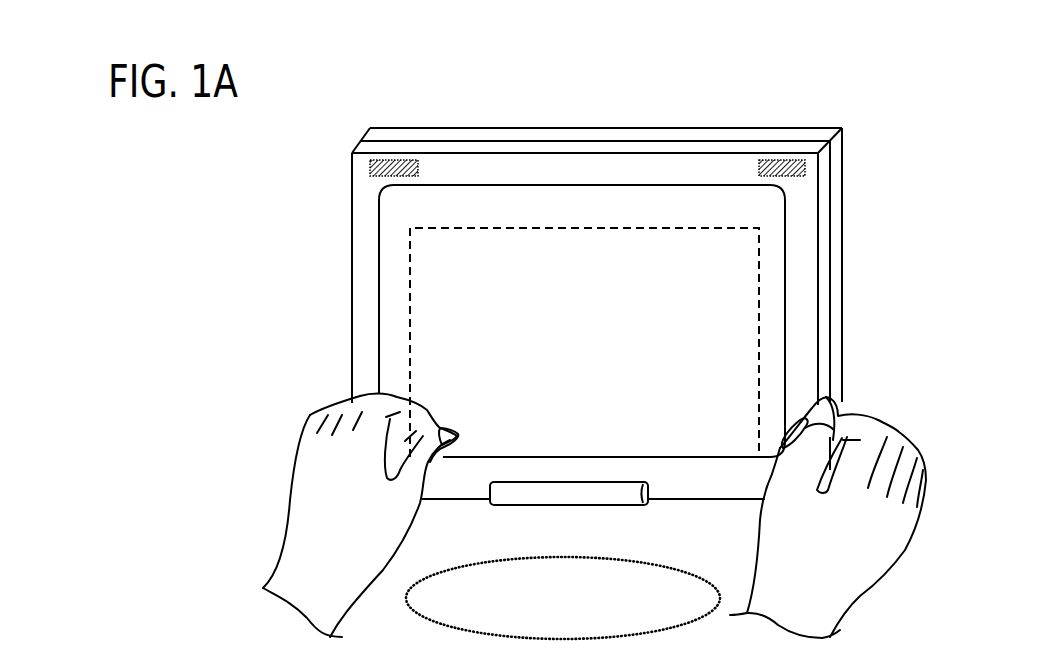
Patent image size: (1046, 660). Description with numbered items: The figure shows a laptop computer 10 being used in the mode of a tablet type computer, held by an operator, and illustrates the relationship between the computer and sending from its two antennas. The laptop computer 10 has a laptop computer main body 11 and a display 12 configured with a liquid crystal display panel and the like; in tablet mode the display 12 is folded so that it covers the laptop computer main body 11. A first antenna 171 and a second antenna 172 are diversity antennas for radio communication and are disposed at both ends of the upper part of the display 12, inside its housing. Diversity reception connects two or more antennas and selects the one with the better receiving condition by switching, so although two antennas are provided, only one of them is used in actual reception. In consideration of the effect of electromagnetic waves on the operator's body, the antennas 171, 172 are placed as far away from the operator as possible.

The laptop computer 10 is at (321, 251).
The laptop computer main body 11 is at (478, 133).
The display 12 is at (583, 163).
The antenna 171 is at (353, 152).
The antenna 172 is at (832, 97).